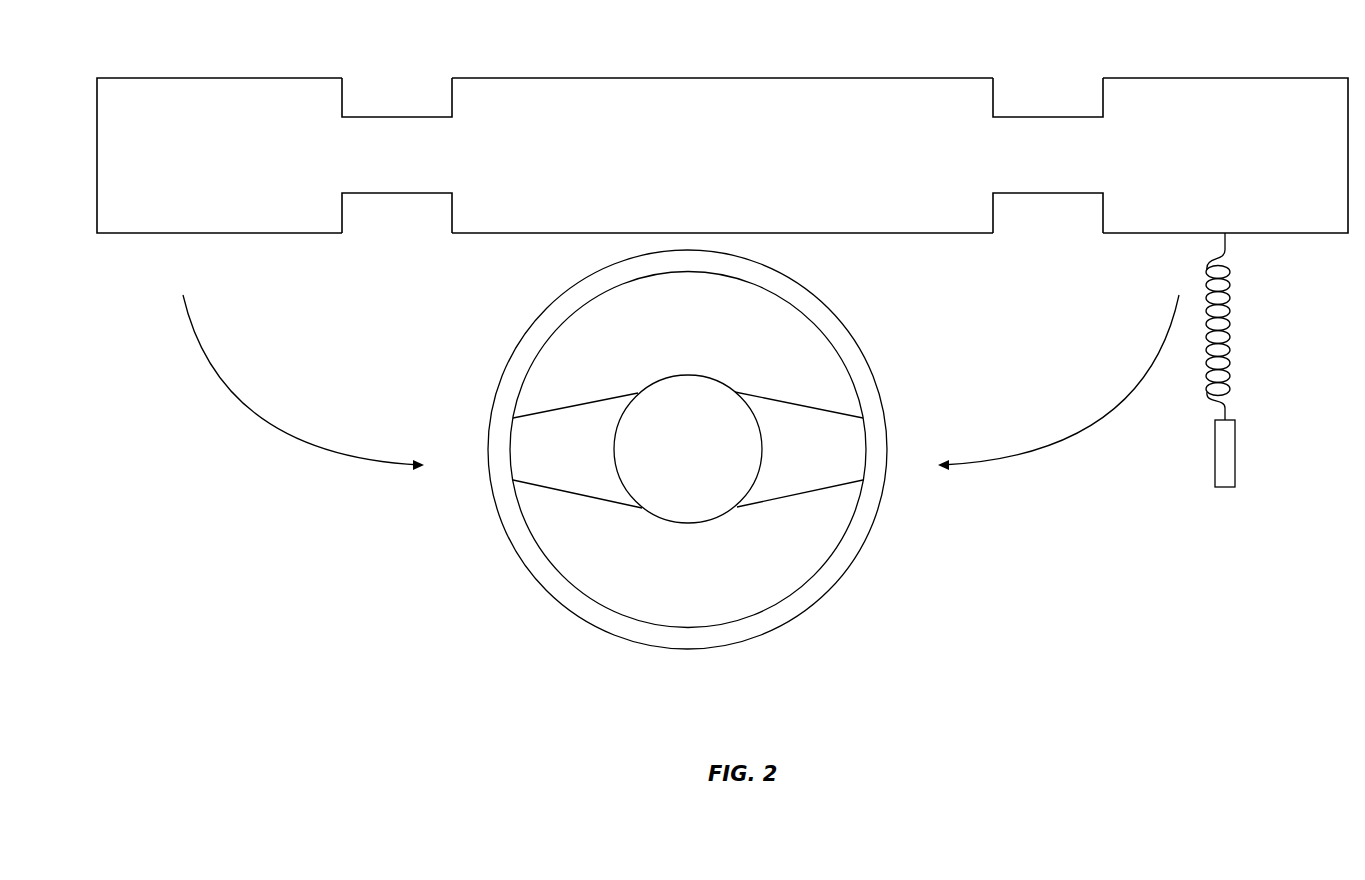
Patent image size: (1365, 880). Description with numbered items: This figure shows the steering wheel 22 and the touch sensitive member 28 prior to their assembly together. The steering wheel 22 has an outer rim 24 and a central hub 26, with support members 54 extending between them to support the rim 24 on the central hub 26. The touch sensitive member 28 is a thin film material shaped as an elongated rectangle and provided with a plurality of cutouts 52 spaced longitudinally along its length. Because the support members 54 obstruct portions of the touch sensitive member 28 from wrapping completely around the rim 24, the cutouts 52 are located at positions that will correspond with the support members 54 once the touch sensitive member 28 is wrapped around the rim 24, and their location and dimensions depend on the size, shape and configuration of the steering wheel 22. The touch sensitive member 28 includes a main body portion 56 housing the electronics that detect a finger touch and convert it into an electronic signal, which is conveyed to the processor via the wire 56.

The steering wheel 22 is at (671, 449).
The rim 24 is at (836, 330).
The central hub 26 is at (688, 374).
The touch sensitive member 28 is at (722, 160).
The cutouts 52 is at (405, 92).
The support members 54 is at (577, 402).
The wire 56 is at (1228, 413).